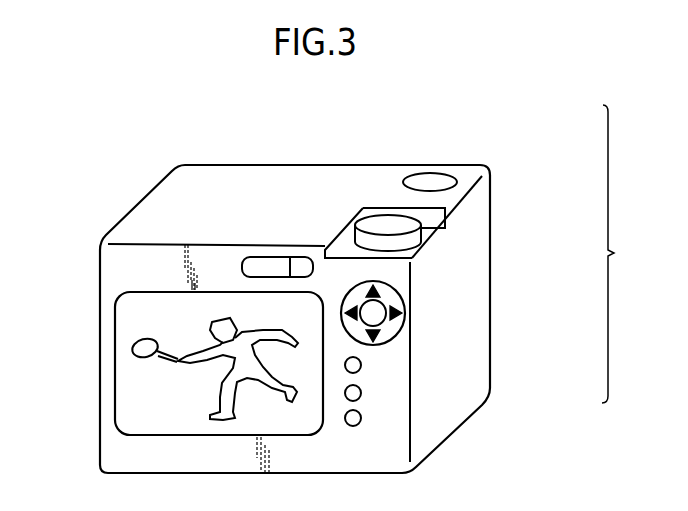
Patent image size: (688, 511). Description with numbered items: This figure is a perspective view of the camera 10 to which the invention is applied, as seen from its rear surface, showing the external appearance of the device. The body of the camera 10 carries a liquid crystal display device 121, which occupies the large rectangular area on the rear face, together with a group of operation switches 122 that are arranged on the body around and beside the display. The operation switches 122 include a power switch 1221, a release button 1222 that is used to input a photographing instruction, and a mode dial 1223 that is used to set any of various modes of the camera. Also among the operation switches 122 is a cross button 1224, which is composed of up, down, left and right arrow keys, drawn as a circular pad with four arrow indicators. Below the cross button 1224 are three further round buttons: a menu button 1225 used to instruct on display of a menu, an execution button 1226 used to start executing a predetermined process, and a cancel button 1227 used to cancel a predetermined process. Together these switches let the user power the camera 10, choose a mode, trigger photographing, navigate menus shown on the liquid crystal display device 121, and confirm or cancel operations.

The camera 10 is at (152, 190).
The liquid crystal display device 121 is at (120, 293).
The operation switches 122 is at (637, 254).
The power switch 1221 is at (302, 256).
The release button 1222 is at (440, 180).
The mode dial 1223 is at (428, 228).
The cross button 1224 is at (388, 302).
The menu button 1225 is at (362, 363).
The execution button 1226 is at (362, 392).
The cancel button 1227 is at (362, 416).